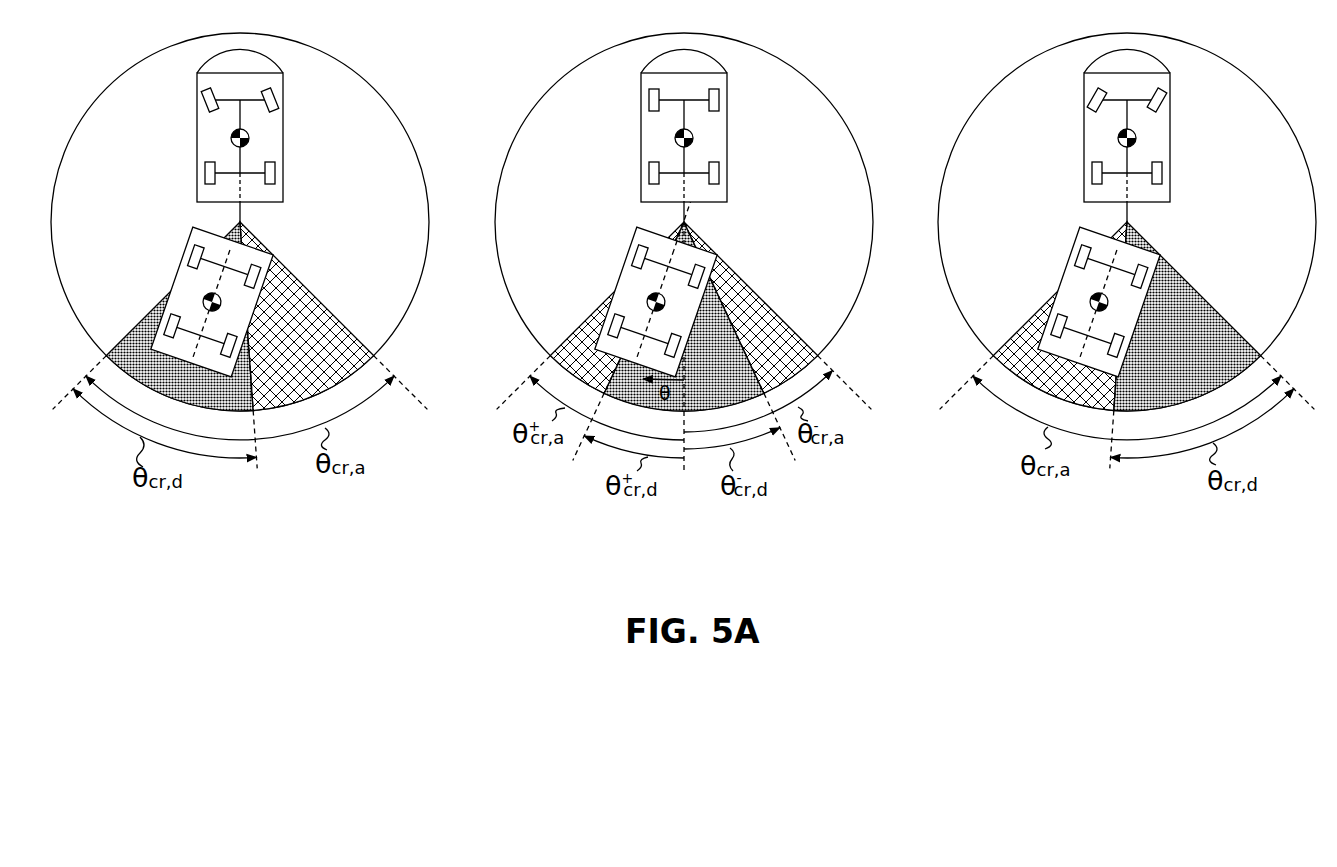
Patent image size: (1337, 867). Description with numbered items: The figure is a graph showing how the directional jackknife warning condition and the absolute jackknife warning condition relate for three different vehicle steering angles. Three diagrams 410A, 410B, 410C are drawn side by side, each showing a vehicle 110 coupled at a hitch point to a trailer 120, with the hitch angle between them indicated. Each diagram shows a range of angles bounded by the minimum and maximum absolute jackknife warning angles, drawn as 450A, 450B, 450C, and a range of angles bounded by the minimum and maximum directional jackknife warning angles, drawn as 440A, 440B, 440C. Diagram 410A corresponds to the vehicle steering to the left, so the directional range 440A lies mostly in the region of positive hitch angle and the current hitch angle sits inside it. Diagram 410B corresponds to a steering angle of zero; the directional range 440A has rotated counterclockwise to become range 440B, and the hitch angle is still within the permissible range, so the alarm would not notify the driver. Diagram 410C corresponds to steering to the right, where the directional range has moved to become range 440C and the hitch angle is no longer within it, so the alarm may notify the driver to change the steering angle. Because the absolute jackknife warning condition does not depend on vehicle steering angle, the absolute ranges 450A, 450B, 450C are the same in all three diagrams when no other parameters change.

The host vehicle 110 is at (287, 117).
The target vehicle 120 is at (178, 256).
The diagram 410A is at (240, 285).
The diagram 410B is at (684, 285).
The diagram 410C is at (1127, 285).
The range of angles bounded by the minimum and maximum directional jackknife warning 440A is at (125, 334).
The range of angles bounded by the minimum and maximum absolute jackknife warning an 450A is at (368, 317).
The range of angles bounded by the minimum and maximum directional jackknife warning 440B is at (723, 327).
The range of angles bounded by the minimum and maximum absolute jackknife warning an 450B is at (805, 311).
The range of angles bounded by the minimum and maximum directional jackknife warning 440C is at (1245, 319).
The range of angles bounded by the minimum and maximum absolute jackknife warning an 450C is at (1020, 334).